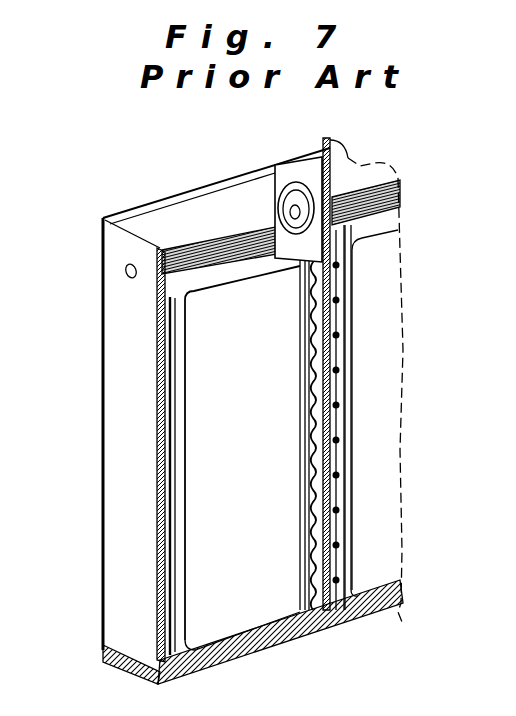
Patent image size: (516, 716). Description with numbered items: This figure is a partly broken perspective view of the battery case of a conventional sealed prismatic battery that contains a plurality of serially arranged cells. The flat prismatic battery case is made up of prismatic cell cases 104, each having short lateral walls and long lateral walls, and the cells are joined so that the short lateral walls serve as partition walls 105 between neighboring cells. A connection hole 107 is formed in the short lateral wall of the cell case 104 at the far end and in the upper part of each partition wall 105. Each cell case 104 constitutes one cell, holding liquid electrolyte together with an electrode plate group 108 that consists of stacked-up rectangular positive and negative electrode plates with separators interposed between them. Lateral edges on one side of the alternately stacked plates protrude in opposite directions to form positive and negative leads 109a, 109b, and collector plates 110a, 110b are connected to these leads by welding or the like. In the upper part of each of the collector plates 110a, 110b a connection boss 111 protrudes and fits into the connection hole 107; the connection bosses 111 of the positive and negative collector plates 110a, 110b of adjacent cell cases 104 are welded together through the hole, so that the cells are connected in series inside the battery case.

The cell case 104 is at (195, 228).
The partition wall 105 is at (157, 463).
The connection hole 107 is at (125, 278).
The electrode plate group 108 is at (258, 550).
The positive lead 109a is at (186, 448).
The negative lead 109b is at (306, 385).
The positive collector plate 110a is at (170, 422).
The negative collector plate 110b is at (310, 353).
The connection boss 111 is at (285, 200).